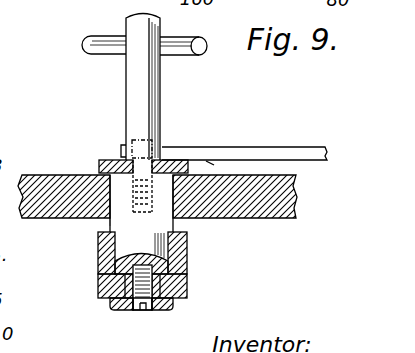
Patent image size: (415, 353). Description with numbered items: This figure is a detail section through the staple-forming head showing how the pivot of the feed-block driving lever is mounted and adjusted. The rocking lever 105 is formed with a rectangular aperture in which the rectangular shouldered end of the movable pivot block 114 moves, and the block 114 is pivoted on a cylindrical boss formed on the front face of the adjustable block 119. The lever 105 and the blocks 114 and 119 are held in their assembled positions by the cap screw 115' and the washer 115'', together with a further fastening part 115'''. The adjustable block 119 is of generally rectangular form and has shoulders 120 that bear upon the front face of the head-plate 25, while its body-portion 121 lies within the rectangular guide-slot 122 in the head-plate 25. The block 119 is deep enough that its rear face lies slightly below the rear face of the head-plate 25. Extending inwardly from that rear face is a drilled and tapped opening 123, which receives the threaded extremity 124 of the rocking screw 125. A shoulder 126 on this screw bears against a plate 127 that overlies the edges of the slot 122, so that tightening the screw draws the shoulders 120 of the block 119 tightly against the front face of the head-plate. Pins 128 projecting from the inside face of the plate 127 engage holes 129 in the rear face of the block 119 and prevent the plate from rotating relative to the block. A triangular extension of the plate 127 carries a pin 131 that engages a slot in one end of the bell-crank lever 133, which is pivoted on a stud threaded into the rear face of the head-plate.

The head-plate 25 is at (283, 193).
The rocking lever 105 is at (110, 285).
The movable pivot block 114 is at (100, 257).
The cap screw 115' is at (99, 319).
The washer 115'' is at (140, 324).
The washer 115''' is at (183, 319).
The adjustable block 119 is at (187, 229).
The shoulders 120 is at (190, 218).
The body-portion 121 is at (118, 203).
The rectangular guide-slot 122 is at (108, 183).
The drilled and tapped opening 123 is at (152, 196).
The threaded extremity 124 is at (162, 156).
The rocking screw 125 is at (148, 99).
The shoulder 126 is at (123, 153).
The plate 127 is at (172, 160).
The pins 128 is at (187, 160).
The holes 129 is at (227, 166).
The pin 131 is at (142, 140).
The bell-crank lever 133 is at (299, 152).